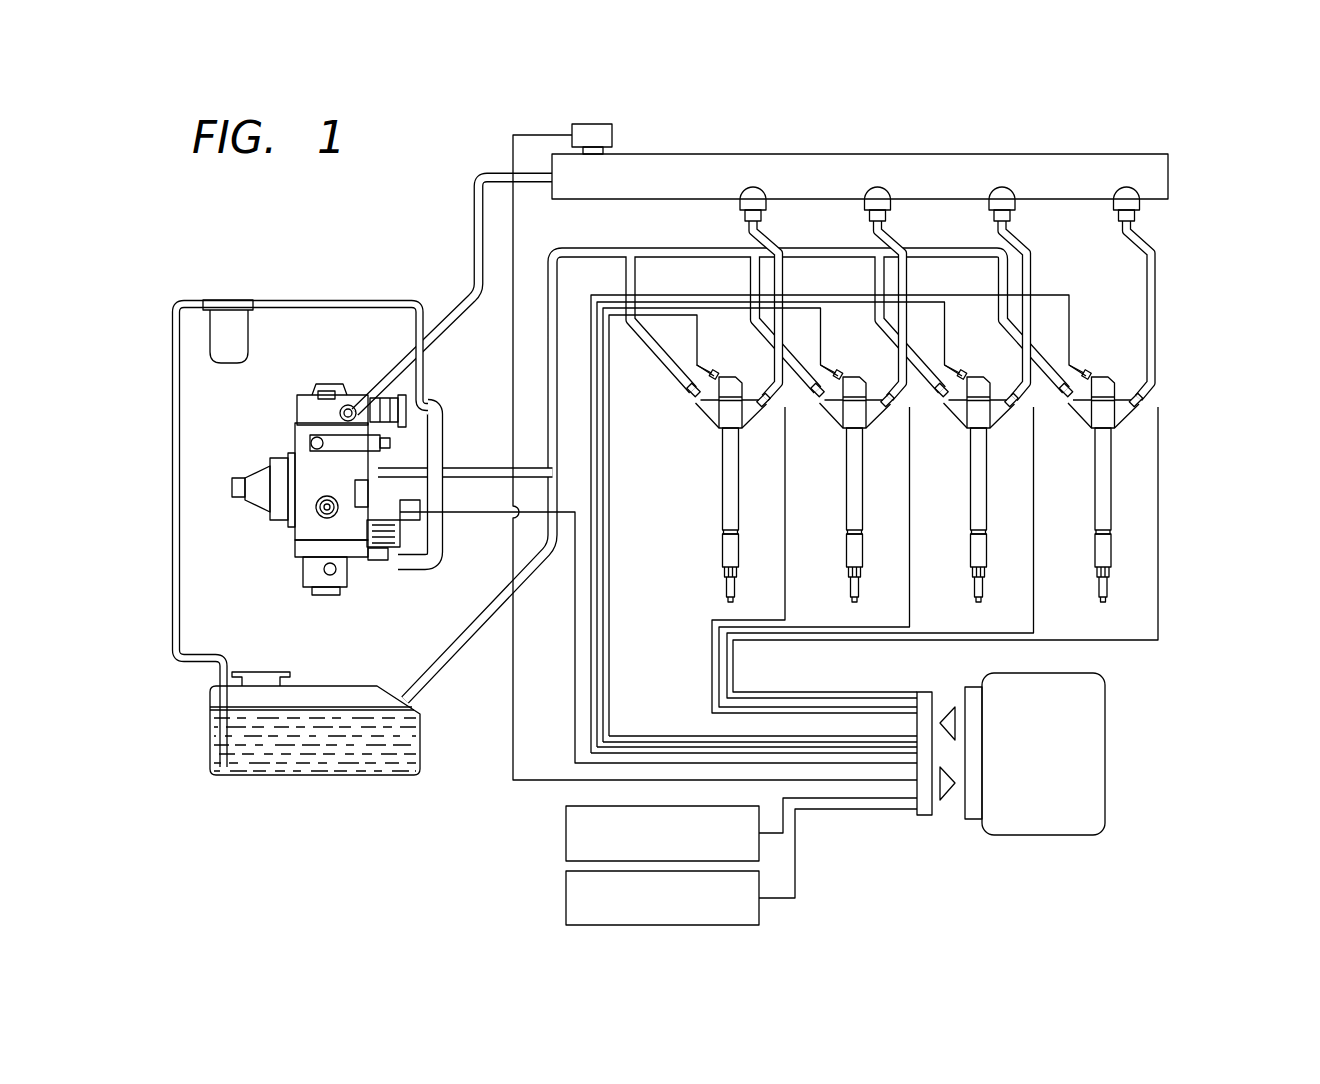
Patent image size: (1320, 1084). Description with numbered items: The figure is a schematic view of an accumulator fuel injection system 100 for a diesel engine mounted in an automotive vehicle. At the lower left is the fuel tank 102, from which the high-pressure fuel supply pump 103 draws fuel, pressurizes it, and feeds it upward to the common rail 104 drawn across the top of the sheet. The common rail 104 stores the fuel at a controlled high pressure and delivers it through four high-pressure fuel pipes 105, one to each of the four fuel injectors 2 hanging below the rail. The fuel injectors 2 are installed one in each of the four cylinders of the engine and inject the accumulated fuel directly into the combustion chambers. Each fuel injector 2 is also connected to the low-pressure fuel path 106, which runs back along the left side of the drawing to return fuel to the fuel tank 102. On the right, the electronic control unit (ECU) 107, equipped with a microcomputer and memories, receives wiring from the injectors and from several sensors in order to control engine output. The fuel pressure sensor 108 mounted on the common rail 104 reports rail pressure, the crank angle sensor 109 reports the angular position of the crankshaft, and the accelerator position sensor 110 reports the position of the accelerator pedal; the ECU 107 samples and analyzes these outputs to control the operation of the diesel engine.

The accumulator fuel injection system 100 is at (1021, 132).
The fuel injector 2 is at (738, 478).
The fuel tank 102 is at (336, 688).
The high-pressure fuel supply pump 103 is at (330, 383).
The common rail 104 is at (806, 153).
The high-pressure fuel pipe 105 is at (785, 283).
The low-pressure fuel path 106 is at (612, 250).
The electronic control unit (ECU) 107 is at (1106, 717).
The fuel pressure sensor 108 is at (600, 124).
The crank angle sensor 109 is at (566, 820).
The accelerator position sensor 110 is at (566, 884).